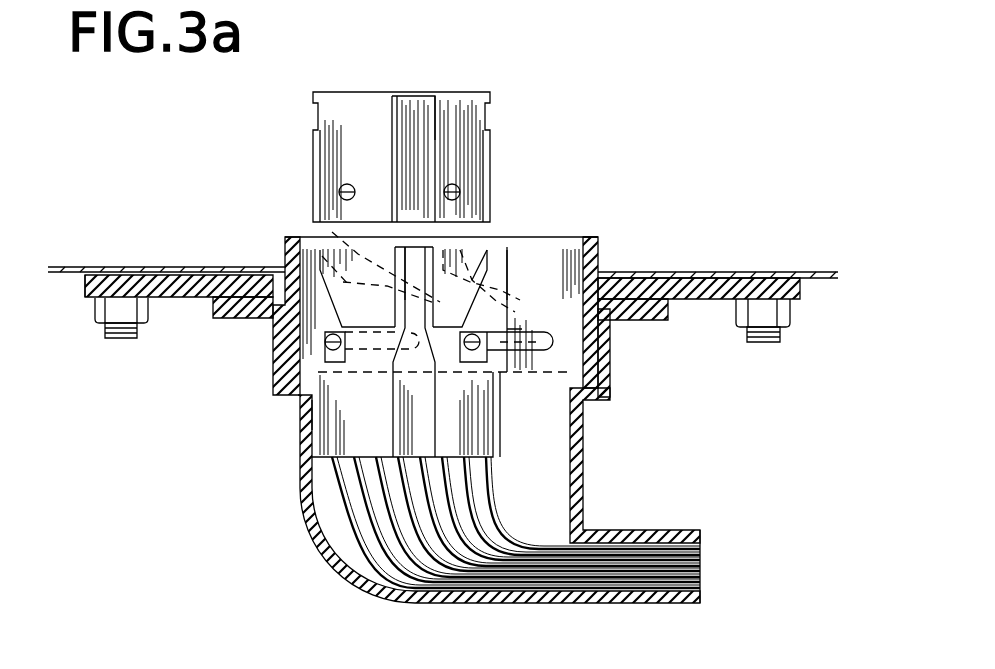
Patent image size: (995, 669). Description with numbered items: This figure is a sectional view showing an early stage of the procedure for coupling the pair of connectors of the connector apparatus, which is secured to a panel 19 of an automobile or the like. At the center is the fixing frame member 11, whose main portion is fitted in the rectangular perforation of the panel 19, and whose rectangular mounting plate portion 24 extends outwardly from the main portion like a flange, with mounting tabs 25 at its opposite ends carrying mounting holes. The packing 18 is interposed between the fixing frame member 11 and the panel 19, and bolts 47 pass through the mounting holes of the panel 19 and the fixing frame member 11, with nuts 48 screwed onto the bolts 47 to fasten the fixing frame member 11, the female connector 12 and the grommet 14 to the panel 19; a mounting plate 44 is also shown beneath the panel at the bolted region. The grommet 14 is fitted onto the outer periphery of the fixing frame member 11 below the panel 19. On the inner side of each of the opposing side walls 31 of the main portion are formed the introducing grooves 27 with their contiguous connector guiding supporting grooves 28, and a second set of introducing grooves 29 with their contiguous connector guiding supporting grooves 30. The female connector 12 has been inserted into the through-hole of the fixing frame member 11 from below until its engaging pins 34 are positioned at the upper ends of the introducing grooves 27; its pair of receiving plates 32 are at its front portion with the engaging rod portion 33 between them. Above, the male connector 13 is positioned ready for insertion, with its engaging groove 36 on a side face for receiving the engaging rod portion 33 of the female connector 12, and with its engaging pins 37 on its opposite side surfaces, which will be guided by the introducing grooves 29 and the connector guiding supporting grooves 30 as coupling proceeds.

The fixing frame member 11 is at (274, 373).
The female connector 12 is at (497, 438).
The male connector 13 is at (490, 138).
The grommet 14 is at (305, 548).
The packing 18 is at (622, 320).
The panel 19 is at (100, 267).
The mounting plate portion 24 is at (245, 320).
The mounting tabs 25 is at (85, 288).
The introducing grooves 27 is at (310, 410).
The connector guiding supporting grooves 28 is at (600, 390).
The introducing grooves 29 is at (332, 232).
The connector guiding supporting grooves 30 is at (528, 296).
The side walls 31 is at (598, 258).
The receiving plates 32 is at (516, 260).
The engaging rod portion 33 is at (410, 246).
The engaging pins 34 is at (325, 358).
The engaging groove 36 is at (413, 105).
The engaging pins 37 is at (386, 153).
The mounting plate 44 is at (183, 300).
The bolts 47 is at (120, 340).
The nuts 48 is at (100, 318).